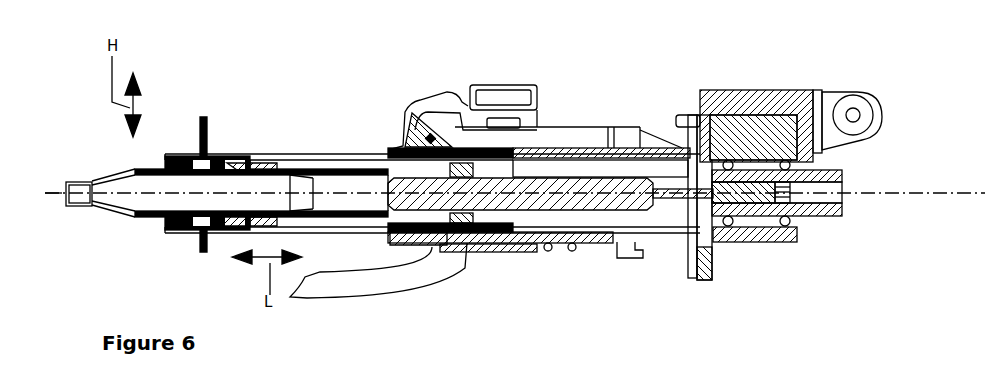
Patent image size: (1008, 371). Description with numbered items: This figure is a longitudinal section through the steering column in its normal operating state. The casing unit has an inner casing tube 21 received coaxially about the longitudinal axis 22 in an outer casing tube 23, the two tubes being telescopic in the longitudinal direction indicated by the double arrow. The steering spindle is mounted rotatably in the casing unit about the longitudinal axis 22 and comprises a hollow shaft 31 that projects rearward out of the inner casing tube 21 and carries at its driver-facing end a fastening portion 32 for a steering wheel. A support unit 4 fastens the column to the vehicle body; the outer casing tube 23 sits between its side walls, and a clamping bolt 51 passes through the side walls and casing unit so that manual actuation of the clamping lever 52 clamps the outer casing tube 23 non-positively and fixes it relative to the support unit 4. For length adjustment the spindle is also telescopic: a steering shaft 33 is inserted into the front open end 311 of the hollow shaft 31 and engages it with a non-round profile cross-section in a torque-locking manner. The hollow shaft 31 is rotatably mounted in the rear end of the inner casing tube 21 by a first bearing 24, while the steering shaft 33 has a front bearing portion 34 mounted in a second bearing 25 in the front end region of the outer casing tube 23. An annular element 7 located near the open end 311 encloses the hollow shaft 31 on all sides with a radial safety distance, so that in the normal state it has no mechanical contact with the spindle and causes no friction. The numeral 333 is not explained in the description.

The longitudinal axis 22 is at (50, 191).
The fastening portion 32 is at (80, 182).
The hollow shaft 31 is at (278, 157).
The inner casing tube 21 is at (327, 156).
The first bearing 24 is at (180, 229).
The wedge element 333 is at (255, 162).
The clamping bolt 51 is at (429, 135).
The support unit 4 is at (525, 86).
The outer casing tube 23 is at (595, 147).
The open end 311 is at (526, 170).
The steering shaft 33 is at (639, 192).
The clamping lever 52 is at (440, 277).
The annular element 7 is at (492, 252).
The second bearing 25 is at (741, 243).
The front bearing portion 34 is at (780, 243).